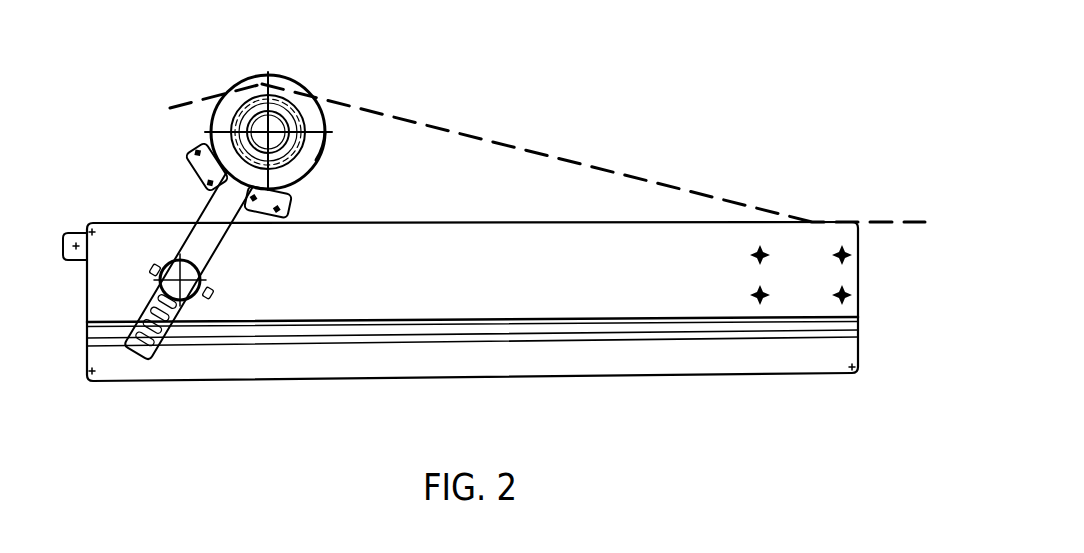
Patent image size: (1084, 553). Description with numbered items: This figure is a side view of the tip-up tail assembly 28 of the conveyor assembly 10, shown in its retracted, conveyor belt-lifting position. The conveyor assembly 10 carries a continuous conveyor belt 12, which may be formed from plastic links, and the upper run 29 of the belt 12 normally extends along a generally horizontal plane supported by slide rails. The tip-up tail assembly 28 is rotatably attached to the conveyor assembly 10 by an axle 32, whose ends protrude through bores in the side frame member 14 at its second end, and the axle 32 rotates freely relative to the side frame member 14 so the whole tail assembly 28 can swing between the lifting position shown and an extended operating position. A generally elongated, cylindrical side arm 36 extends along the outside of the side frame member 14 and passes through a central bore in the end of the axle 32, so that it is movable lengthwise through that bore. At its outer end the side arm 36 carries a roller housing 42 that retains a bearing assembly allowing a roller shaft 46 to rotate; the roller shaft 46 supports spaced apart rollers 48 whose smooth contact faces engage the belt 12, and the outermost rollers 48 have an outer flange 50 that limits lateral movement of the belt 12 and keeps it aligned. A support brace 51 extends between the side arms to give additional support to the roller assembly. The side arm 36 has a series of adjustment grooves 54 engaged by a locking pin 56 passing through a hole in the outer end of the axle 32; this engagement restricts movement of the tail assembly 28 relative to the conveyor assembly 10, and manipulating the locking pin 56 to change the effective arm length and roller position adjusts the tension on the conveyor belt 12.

The conveyor assembly 10 is at (690, 185).
The continuous conveyor belt 12 is at (535, 110).
The side frame member 14 is at (837, 277).
The tip-up tail assembly 28 is at (233, 211).
The upper run 29 is at (568, 160).
The axle 32 is at (163, 266).
The side arm 36 is at (203, 233).
The roller housing 42 is at (217, 95).
The roller shaft 46 is at (327, 147).
The roller 48 is at (300, 98).
The outer flange 50 is at (272, 73).
The support brace 51 is at (279, 204).
The adjustment grooves 54 is at (160, 357).
The locking pin 56 is at (210, 298).